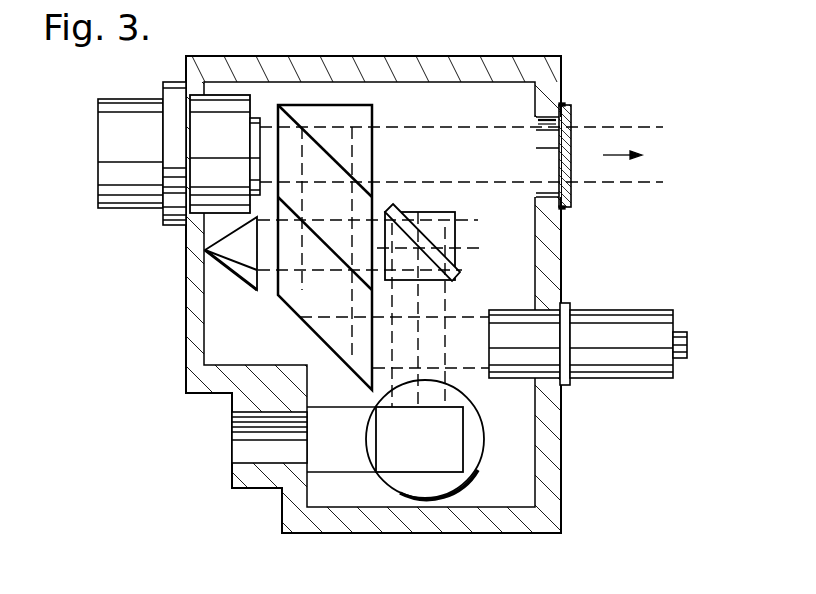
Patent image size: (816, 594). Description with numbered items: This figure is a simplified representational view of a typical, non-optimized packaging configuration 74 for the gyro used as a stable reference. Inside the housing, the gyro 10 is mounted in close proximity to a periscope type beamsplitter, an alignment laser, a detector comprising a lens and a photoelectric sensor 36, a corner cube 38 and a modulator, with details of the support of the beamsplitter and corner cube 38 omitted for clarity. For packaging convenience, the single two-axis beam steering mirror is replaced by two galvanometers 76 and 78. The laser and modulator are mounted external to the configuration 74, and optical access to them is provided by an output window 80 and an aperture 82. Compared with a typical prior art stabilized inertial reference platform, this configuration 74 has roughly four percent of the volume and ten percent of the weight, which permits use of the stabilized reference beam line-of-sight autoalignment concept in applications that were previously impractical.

The packaging configuration 74 is at (592, 37).
The gyro 10 is at (163, 83).
The photoelectric sensor 36 is at (613, 308).
The corner cube 38 is at (253, 293).
The galvanometer 76 is at (450, 212).
The galvanometer 78 is at (472, 472).
The output window 80 is at (566, 209).
The aperture 82 is at (557, 122).